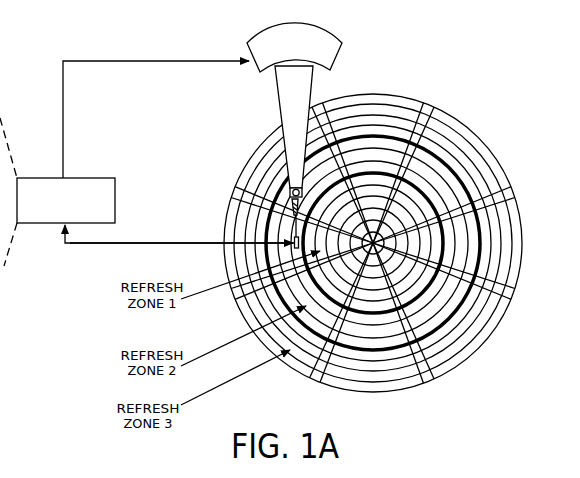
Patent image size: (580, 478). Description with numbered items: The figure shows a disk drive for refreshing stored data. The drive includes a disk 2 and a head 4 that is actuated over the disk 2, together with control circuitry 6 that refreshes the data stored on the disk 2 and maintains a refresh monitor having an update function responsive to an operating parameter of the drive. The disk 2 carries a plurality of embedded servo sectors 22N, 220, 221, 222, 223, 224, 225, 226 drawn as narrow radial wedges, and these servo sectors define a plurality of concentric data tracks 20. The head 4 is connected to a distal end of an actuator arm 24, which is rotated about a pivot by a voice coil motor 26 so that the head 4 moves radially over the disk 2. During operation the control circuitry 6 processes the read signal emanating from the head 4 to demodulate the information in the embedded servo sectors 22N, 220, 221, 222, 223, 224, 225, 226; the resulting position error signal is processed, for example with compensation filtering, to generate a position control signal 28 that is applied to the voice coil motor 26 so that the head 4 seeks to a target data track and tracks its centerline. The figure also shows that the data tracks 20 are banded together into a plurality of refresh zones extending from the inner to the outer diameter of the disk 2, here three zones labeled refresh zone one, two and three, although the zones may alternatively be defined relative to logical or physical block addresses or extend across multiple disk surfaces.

The disk 2 is at (474, 129).
The head 4 is at (294, 248).
The control circuitry 6 is at (95, 178).
The data tracks 20 is at (372, 116).
The embedded servo sector 22N is at (326, 108).
The embedded servo sector 220 is at (429, 108).
The embedded servo sector 221 is at (512, 186).
The embedded servo sector 222 is at (512, 301).
The embedded servo sector 223 is at (426, 386).
The embedded servo sector 224 is at (316, 387).
The embedded servo sector 225 is at (238, 306).
The embedded servo sector 226 is at (238, 180).
The actuator arm 24 is at (279, 112).
The voice coil motor 26 is at (260, 68).
The position control signal 28 is at (62, 110).